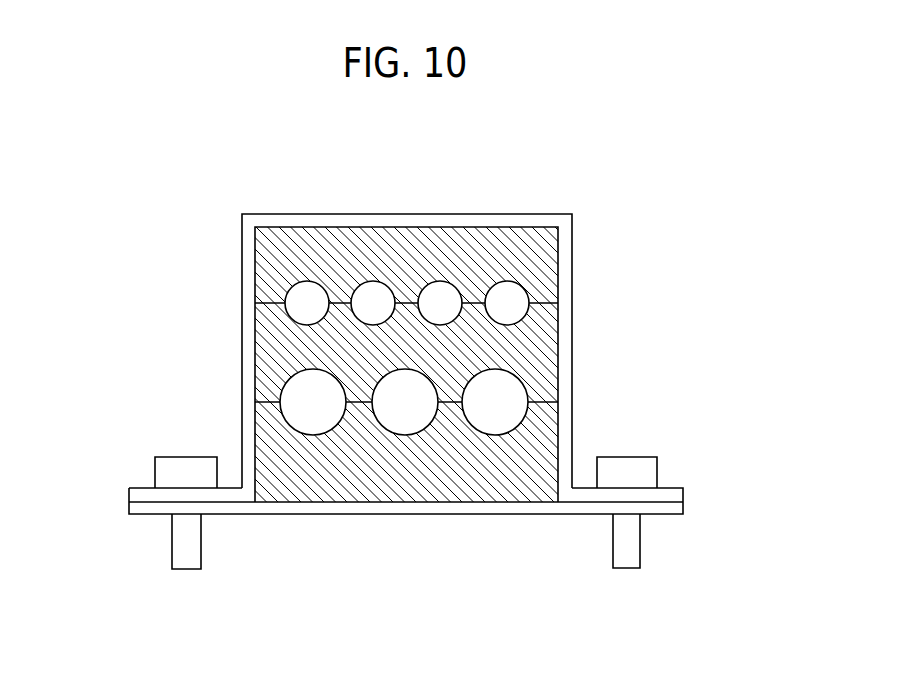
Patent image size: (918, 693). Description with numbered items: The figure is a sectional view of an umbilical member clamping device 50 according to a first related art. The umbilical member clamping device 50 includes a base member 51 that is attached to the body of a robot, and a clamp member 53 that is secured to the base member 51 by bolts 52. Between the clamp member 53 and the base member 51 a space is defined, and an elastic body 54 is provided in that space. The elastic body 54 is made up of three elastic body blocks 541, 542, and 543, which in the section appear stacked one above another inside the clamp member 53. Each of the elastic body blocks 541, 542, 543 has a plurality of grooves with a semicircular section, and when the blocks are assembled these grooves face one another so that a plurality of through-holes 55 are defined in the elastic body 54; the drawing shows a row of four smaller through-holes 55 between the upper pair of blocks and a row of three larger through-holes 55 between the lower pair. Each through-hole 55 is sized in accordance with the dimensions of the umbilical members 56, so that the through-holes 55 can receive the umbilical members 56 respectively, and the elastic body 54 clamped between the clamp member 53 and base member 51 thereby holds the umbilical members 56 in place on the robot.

The umbilical member clamping device 50 is at (73, 150).
The base member 51 is at (668, 515).
The bolts 52 is at (177, 457).
The clamp member 53 is at (542, 213).
The elastic body 54 is at (257, 270).
The elastic body block 541 is at (545, 450).
The elastic body block 542 is at (278, 365).
The elastic body block 543 is at (543, 260).
The through-holes 55 is at (358, 280).
The umbilical members 56 is at (302, 298).